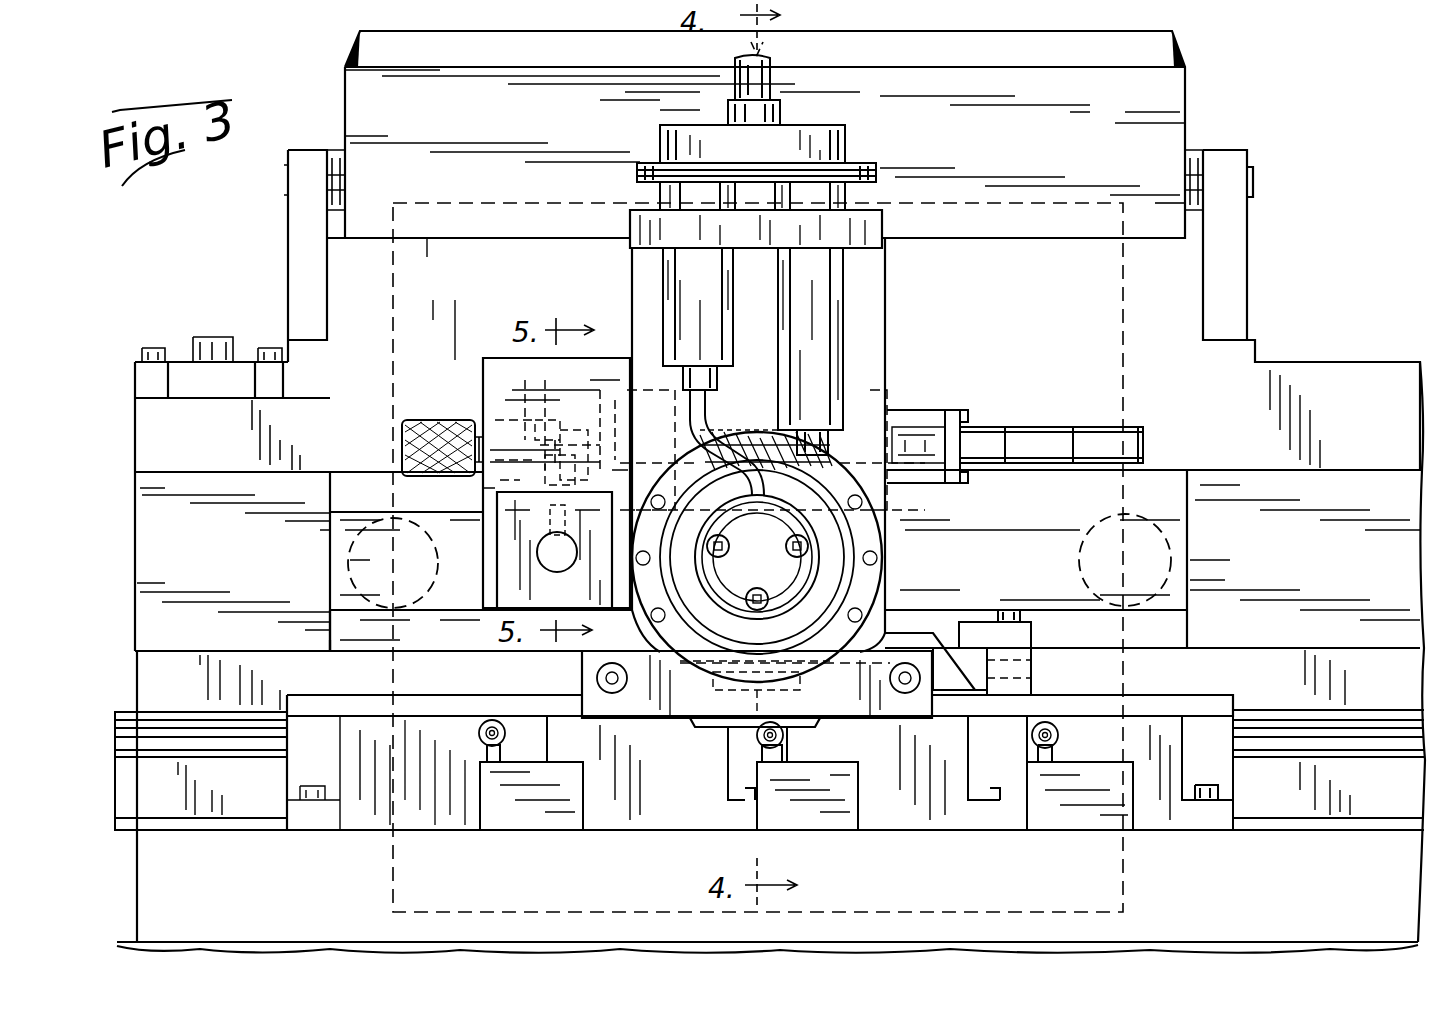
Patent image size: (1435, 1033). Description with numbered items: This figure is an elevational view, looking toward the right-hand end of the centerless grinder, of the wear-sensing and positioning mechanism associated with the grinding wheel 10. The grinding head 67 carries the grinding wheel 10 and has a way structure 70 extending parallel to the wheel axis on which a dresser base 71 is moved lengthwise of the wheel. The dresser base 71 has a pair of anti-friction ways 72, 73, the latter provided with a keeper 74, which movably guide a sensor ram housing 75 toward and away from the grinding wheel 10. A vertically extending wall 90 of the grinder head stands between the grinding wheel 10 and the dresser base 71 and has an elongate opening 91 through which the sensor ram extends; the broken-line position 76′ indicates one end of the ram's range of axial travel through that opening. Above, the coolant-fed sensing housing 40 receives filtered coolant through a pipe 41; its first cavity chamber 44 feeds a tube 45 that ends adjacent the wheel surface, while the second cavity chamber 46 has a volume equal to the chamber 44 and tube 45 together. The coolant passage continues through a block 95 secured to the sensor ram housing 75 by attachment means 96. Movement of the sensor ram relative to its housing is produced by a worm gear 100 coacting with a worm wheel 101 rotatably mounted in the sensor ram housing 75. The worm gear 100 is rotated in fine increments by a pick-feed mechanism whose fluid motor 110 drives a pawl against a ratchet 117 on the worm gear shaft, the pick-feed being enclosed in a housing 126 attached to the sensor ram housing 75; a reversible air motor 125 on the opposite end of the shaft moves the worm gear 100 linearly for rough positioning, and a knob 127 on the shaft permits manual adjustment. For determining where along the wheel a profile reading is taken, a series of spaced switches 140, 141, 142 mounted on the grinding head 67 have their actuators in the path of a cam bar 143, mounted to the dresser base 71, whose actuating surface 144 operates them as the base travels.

The grinding wheel 10 is at (1073, 200).
The housing 40 is at (870, 157).
The pipe 41 is at (758, 85).
The cavity chamber 44 is at (680, 270).
The tube 45 is at (704, 412).
The cavity chamber 46 is at (833, 272).
The grinding head 67 is at (445, 816).
The way structure 70 is at (125, 802).
The dresser base 71 is at (1215, 700).
The anti-friction way 72 is at (520, 668).
The anti-friction way 73 is at (970, 665).
The keeper 74 is at (975, 630).
The sensor ram housing 75 is at (880, 608).
The sensor ram broken-line position 76′ is at (347, 563).
The vertically extending wall 90 is at (1233, 362).
The elongate opening 91 is at (1172, 512).
The block 95 is at (795, 573).
The attachment means 96 is at (718, 548).
The worm gear 100 is at (763, 530).
The worm wheel 101 is at (757, 557).
The fluid motor 110 is at (505, 572).
The ratchet 117 is at (560, 402).
The reversible air motor 125 is at (1043, 437).
The housing 126 is at (492, 488).
The knob 127 is at (420, 440).
The switch 140 is at (563, 815).
The switch 141 is at (805, 820).
The switch 142 is at (1068, 825).
The cam bar 143 is at (668, 722).
The actuating surface 144 is at (815, 733).